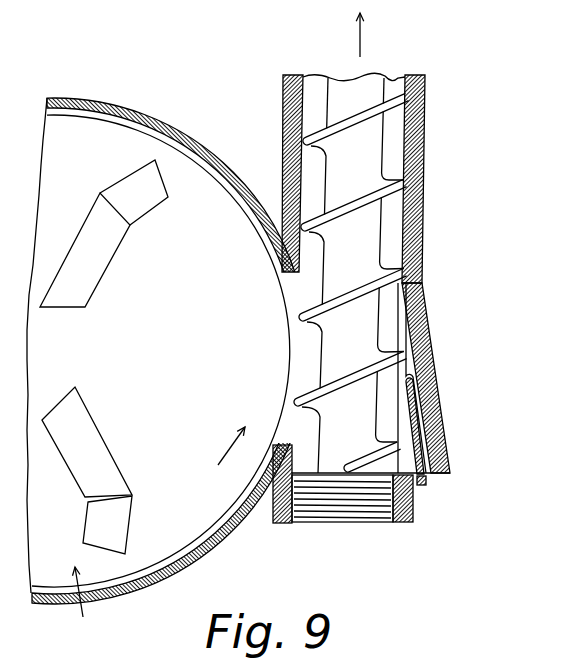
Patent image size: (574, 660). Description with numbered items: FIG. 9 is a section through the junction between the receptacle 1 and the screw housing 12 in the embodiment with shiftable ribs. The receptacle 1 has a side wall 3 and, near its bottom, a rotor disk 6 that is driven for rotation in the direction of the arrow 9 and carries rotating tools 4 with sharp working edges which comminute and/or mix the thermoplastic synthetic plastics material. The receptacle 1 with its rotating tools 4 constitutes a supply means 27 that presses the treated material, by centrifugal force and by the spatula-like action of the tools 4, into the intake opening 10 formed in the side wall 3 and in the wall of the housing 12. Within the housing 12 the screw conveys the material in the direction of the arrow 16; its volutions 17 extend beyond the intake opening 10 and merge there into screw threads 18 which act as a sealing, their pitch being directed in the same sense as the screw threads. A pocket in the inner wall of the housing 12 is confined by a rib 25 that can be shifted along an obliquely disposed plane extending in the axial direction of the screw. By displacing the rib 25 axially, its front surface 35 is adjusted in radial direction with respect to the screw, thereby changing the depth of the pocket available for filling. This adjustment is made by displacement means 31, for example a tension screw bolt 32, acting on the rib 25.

The receptacle 1 is at (142, 110).
The side wall 3 is at (212, 157).
The rotating tool 4 is at (107, 267).
The rotor disk 6 is at (170, 434).
The arrow 9 is at (234, 448).
The intake opening 10 is at (298, 299).
The housing 12 is at (426, 144).
The arrow 16 is at (363, 37).
The volutions 17 is at (304, 313).
The screw threads 18 is at (367, 510).
The rib 25 is at (403, 330).
The supply means 27 is at (100, 609).
The displacement means 31 is at (425, 481).
The tension screw bolt 32 is at (418, 437).
The front surface 35 is at (396, 324).